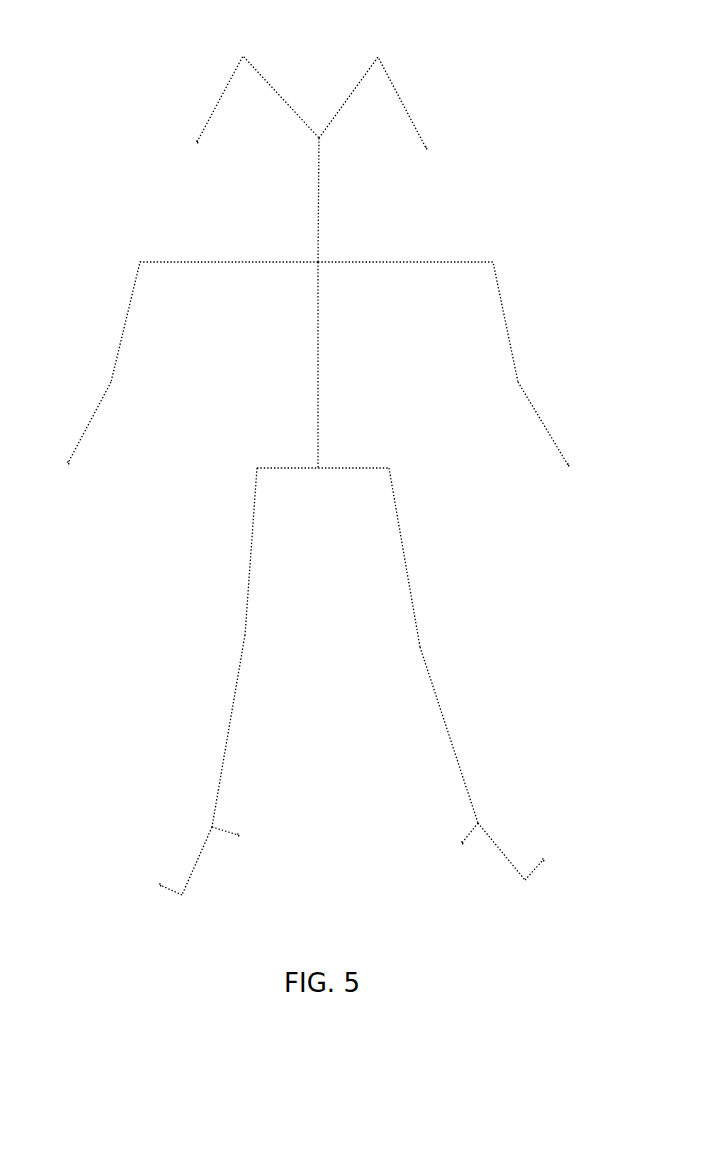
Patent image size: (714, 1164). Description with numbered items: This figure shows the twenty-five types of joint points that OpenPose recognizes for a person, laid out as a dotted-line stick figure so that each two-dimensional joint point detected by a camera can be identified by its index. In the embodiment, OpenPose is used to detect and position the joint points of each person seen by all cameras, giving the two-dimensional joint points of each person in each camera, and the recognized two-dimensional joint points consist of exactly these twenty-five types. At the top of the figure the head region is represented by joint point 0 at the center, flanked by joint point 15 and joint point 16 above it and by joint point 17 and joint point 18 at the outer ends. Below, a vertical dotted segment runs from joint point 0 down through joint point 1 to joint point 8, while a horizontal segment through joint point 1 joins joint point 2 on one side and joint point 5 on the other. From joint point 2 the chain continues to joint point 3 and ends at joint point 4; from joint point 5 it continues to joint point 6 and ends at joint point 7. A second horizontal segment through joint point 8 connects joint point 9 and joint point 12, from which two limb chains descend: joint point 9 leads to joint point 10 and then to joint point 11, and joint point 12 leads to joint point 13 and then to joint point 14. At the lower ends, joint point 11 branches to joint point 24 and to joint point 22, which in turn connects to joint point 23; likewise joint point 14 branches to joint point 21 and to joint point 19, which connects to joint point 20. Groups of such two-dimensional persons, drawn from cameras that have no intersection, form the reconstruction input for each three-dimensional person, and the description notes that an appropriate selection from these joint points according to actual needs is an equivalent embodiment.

The neck joint 0 is at (331, 200).
The chest / shoulder center joint 1 is at (330, 365).
The right shoulder joint 2 is at (214, 308).
The right elbow joint 3 is at (99, 414).
The right wrist joint 4 is at (65, 477).
The left shoulder joint 5 is at (418, 306).
The left elbow joint 6 is at (543, 416).
The left wrist joint 7 is at (576, 463).
The pelvis / hip center joint 8 is at (323, 458).
The right hip joint 9 is at (251, 536).
The right knee joint 10 is at (245, 726).
The right ankle joint 11 is at (210, 849).
The left hip joint 12 is at (407, 542).
The left knee joint 13 is at (449, 726).
The left ankle joint 14 is at (493, 834).
The right eye keypoint 15 is at (258, 85).
The left eye keypoint 16 is at (372, 88).
The right ear keypoint 17 is at (197, 156).
The left ear keypoint 18 is at (432, 160).
The left big toe keypoint 19 is at (522, 885).
The left small toe keypoint 20 is at (547, 852).
The left heel keypoint 21 is at (448, 850).
The right big toe keypoint 22 is at (184, 904).
The right small toe keypoint 23 is at (144, 878).
The right heel keypoint 24 is at (253, 838).